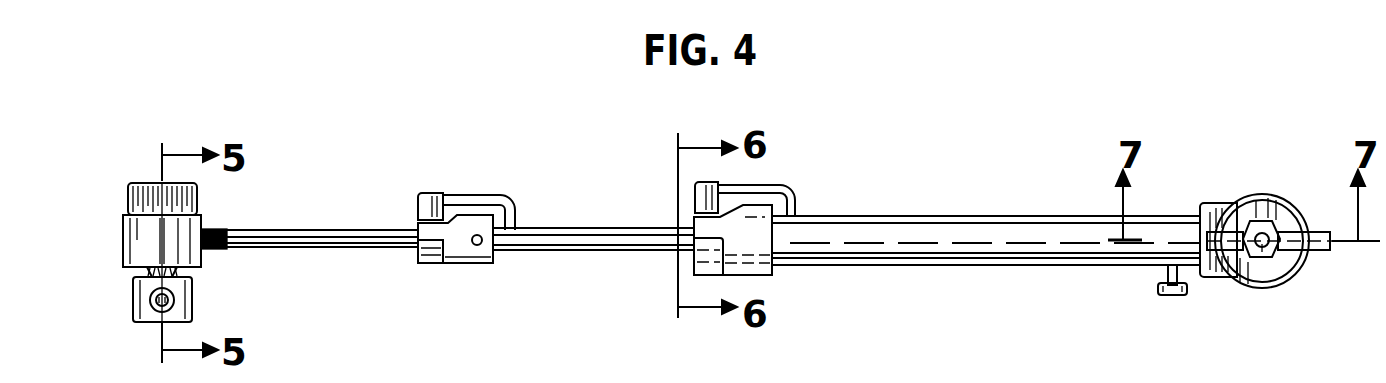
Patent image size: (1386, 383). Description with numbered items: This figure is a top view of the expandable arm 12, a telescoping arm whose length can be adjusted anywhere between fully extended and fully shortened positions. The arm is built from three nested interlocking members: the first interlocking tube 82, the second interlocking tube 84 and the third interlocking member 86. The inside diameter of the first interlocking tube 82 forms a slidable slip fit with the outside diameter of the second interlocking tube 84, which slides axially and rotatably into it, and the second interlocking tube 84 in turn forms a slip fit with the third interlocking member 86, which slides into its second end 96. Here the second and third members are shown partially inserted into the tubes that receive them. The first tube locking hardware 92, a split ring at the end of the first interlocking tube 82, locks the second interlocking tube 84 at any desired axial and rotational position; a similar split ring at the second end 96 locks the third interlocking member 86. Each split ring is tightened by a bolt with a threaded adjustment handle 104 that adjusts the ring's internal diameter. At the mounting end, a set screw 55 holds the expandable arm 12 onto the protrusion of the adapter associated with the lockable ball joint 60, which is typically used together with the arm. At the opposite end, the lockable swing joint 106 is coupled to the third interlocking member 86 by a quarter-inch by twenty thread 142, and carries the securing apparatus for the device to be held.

The expandable arm 12 is at (986, 245).
The set screw 55 is at (1171, 295).
The lockable ball joint 60 is at (1283, 329).
The first interlocking tube 82 is at (993, 265).
The second interlocking tube 84 is at (606, 250).
The third interlocking member 86 is at (341, 248).
The first tube locking hardware 92 is at (770, 275).
The second end of second interlocking tube 96 is at (471, 263).
The threaded adjustment handle 104 is at (441, 196).
The lockable swing joint 106 is at (107, 251).
The thread 142 is at (213, 231).